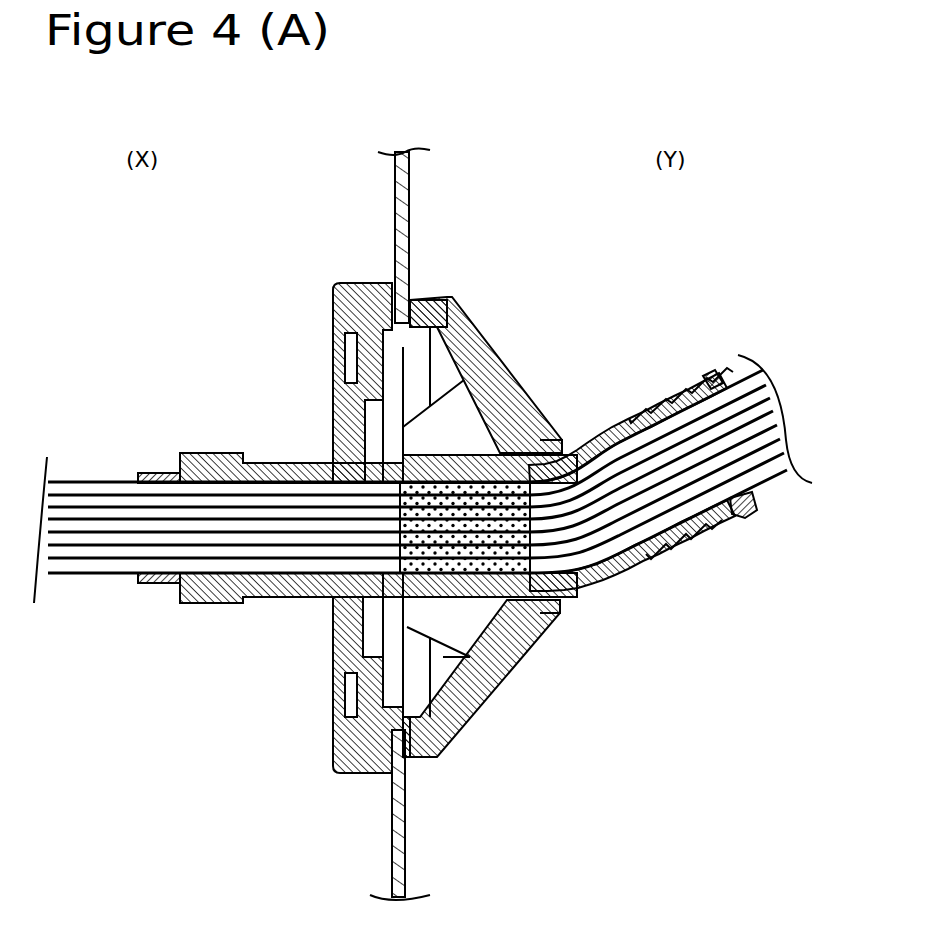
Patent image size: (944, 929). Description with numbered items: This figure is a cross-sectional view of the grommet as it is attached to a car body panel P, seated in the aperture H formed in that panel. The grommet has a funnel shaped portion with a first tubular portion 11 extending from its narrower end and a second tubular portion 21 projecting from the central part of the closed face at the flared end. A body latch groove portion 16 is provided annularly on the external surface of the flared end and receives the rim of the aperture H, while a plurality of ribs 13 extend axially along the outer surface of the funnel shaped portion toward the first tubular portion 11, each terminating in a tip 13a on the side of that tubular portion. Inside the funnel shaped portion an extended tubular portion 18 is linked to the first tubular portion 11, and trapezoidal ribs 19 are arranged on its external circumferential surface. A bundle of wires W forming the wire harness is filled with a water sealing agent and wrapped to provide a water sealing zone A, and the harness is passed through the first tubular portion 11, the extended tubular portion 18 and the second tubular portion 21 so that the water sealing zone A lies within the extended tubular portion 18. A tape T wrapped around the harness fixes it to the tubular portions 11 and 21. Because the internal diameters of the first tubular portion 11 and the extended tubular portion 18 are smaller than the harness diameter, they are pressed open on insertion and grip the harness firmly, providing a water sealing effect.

The body latch groove portion 16 is at (395, 287).
The rib 13 is at (492, 348).
The rib 19 is at (508, 383).
The tip 13a is at (565, 440).
The first tubular portion 11 is at (613, 435).
The tape T is at (170, 602).
The body panel P is at (408, 176).
The second tubular portion 21 is at (302, 600).
The aperture H is at (347, 775).
The water sealing zone A is at (500, 600).
The extended tubular portion 18 is at (470, 560).
The wires W is at (760, 462).